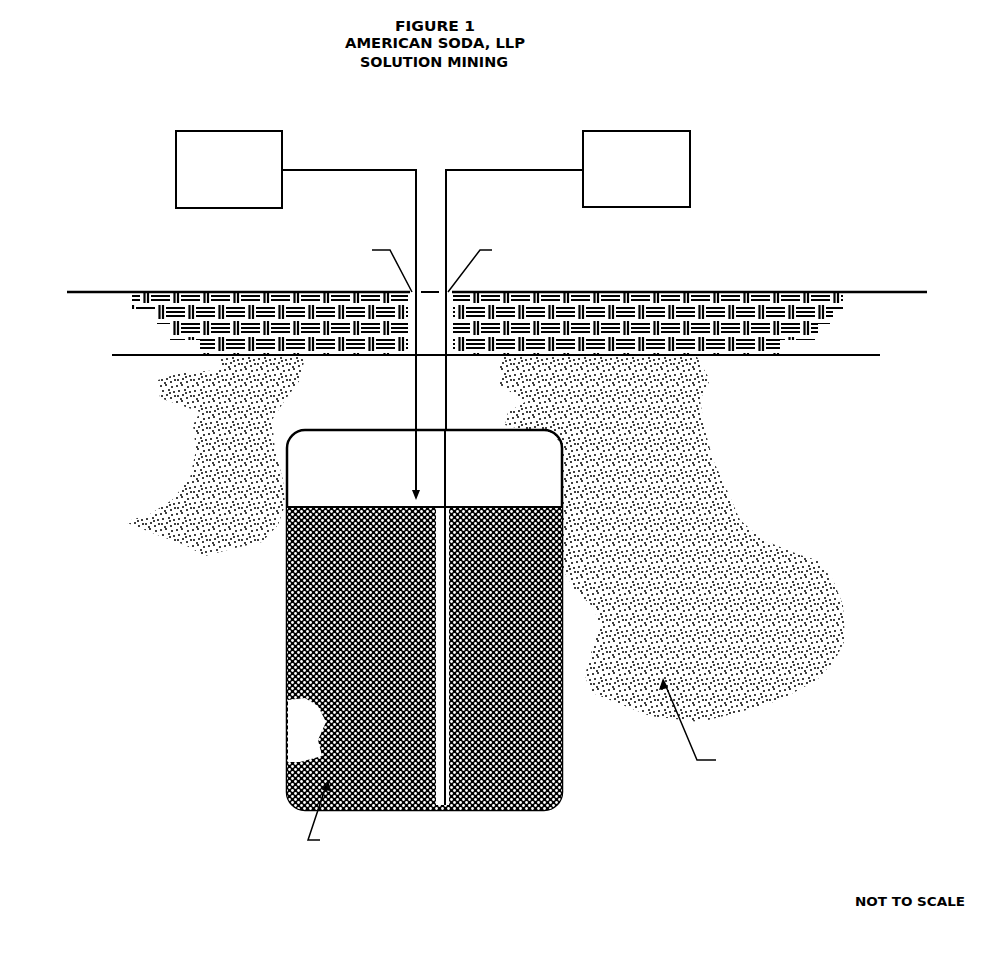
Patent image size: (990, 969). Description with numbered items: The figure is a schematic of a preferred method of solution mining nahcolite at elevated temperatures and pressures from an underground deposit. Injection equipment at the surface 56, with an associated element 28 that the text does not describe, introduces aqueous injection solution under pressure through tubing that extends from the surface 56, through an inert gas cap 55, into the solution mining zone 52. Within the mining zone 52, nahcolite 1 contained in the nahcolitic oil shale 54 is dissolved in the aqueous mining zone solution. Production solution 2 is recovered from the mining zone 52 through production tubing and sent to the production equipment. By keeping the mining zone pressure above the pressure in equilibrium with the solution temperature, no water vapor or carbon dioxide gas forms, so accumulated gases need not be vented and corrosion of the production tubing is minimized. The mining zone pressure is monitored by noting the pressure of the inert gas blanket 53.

The nahcolite 1 is at (306, 734).
The production solution 2 is at (568, 280).
The injection equipment 28 is at (298, 315).
The solution mining zone 52 is at (424, 647).
The inert gas blanket 53 is at (424, 481).
The nahcolitic oil shale 54 is at (485, 571).
The inert gas cap 55 is at (496, 324).
The surface 56 is at (497, 283).